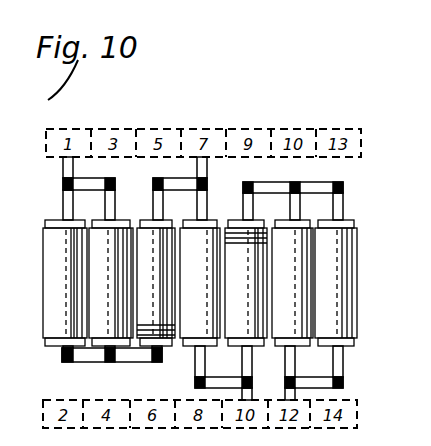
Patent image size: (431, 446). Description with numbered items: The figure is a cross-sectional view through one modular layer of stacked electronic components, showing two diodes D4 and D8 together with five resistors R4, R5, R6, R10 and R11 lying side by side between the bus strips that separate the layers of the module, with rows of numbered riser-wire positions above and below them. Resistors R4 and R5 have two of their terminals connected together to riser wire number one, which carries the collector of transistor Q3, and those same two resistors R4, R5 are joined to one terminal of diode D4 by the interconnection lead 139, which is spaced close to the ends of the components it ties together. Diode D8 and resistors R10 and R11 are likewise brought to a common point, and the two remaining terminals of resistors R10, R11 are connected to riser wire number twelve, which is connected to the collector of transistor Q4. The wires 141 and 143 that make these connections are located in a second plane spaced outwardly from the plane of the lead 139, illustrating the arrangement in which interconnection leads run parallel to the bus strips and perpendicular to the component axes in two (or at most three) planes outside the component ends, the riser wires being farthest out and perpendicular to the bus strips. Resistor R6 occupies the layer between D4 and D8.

The resistor R4 is at (58, 253).
The resistor R5 is at (100, 240).
The diode D4 is at (147, 240).
The resistor R6 is at (190, 240).
The diode D8 is at (237, 250).
The resistor R10 is at (283, 260).
The resistor R11 is at (342, 252).
The interconnection lead 139 is at (137, 356).
The wire 141 is at (212, 388).
The wire 143 is at (316, 389).